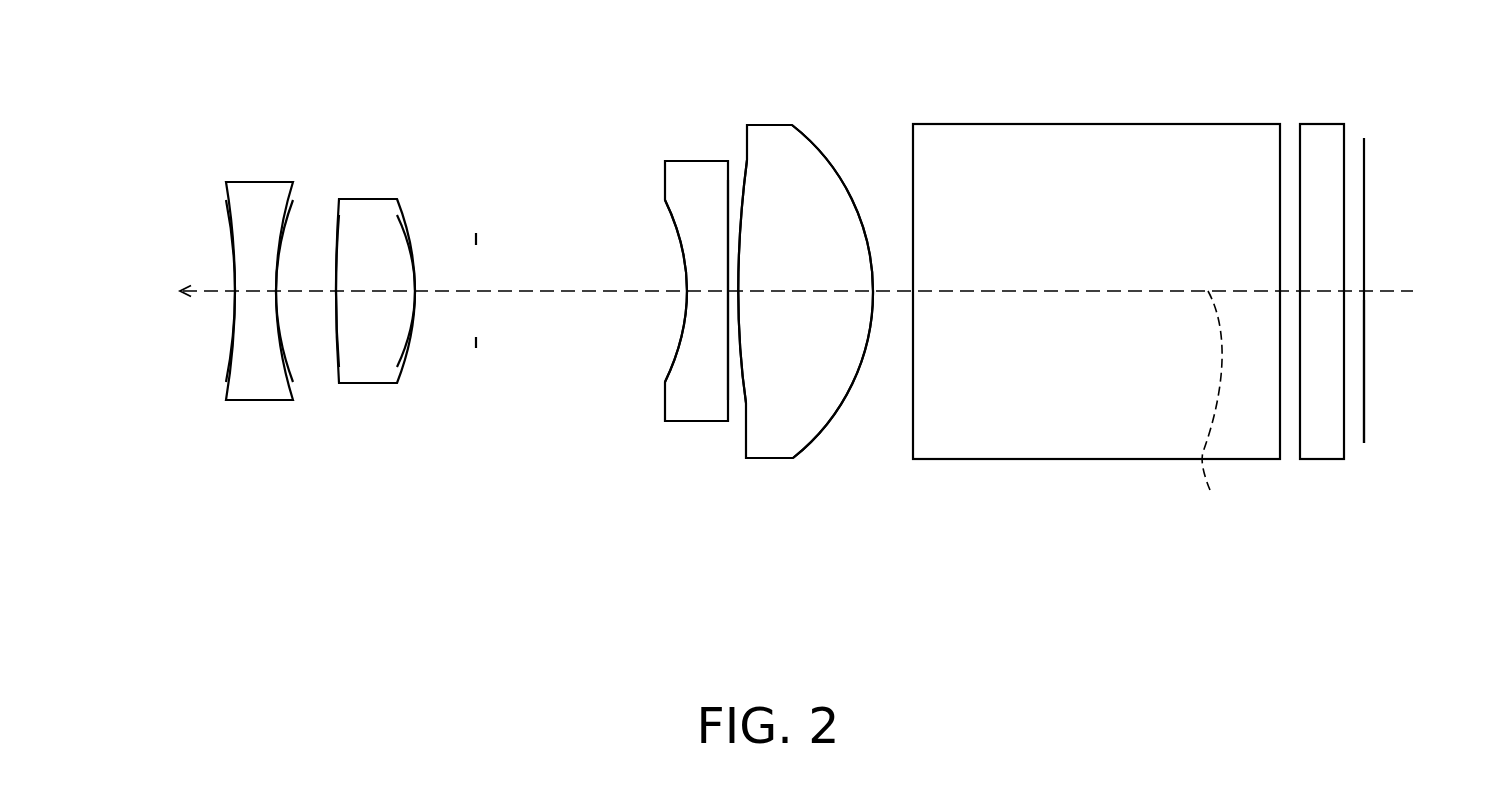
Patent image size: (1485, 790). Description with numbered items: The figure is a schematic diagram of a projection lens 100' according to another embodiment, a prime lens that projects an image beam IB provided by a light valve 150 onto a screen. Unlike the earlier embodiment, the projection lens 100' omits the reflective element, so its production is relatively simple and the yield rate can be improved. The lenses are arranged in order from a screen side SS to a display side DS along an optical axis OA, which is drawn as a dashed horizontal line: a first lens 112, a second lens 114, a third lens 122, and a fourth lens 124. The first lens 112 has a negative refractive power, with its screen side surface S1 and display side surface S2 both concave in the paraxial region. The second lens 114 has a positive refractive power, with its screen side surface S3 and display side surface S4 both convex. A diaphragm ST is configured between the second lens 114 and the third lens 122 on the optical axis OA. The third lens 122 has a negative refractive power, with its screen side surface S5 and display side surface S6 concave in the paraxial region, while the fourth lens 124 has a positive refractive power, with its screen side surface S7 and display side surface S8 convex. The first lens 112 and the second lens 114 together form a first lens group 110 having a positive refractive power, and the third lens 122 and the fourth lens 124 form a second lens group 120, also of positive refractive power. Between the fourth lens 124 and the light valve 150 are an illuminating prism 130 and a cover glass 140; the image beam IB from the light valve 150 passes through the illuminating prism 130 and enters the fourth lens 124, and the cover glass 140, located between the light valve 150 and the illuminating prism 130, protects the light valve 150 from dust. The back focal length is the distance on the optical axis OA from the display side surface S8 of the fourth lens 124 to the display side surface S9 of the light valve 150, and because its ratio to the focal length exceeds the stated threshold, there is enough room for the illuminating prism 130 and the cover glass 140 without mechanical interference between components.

The projection lens 100' is at (1332, 616).
The first lens group 110 is at (235, 106).
The first lens 112 is at (262, 182).
The second lens 114 is at (361, 199).
The second lens group 120 is at (665, 47).
The third lens 122 is at (693, 161).
The fourth lens 124 is at (770, 125).
The illuminating prism 130 is at (1083, 124).
The cover glass 140 is at (1323, 124).
The light valve 150 is at (1364, 160).
The diaphragm ST is at (476, 233).
The optical axis OA is at (556, 291).
The screen side SS is at (180, 232).
The display side DS is at (1393, 178).
The image beam IB is at (1210, 409).
The screen side surface of the first lens S1 is at (230, 363).
The display side surface of the first lens S2 is at (301, 363).
The screen side surface of the second lens S3 is at (326, 365).
The display side surface of the second lens S4 is at (413, 366).
The screen side surface of the third lens S5 is at (676, 355).
The display side surface of the third lens S6 is at (728, 366).
The screen side surface of the fourth lens S7 is at (743, 403).
The display side surface of the fourth lens S8 is at (833, 416).
The display side surface of the light valve S9 is at (1363, 432).